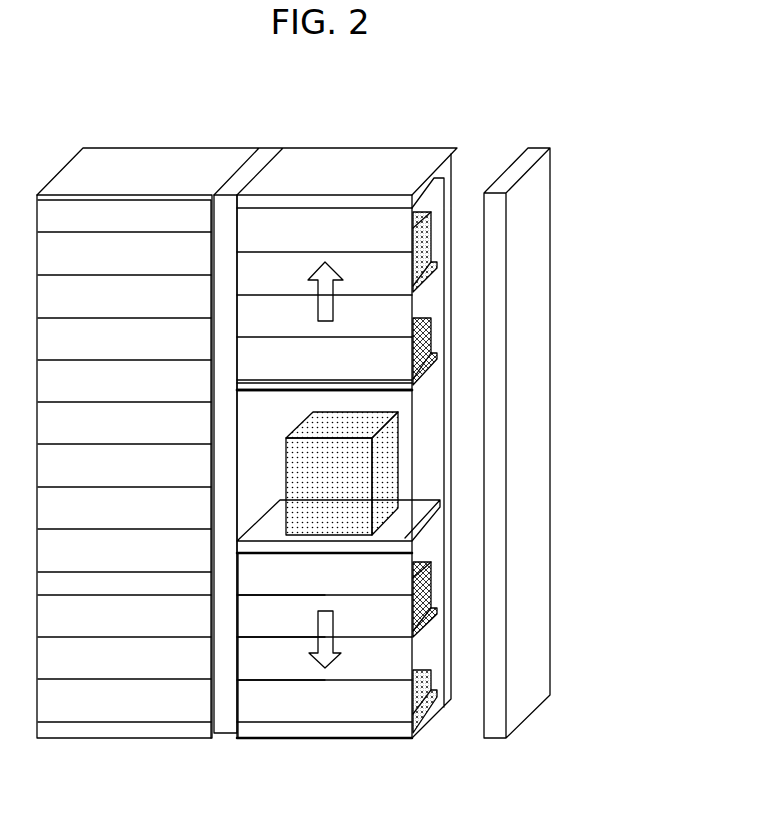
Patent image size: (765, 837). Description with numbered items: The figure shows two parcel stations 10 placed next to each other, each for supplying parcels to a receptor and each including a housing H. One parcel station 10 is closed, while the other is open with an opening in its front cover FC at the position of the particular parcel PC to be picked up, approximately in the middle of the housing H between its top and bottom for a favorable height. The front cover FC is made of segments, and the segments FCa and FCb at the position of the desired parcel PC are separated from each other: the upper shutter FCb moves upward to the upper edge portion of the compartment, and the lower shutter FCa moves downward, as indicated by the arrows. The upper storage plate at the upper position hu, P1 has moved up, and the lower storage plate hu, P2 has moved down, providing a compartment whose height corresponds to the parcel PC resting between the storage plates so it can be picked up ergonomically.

The parcel station 10 is at (157, 160).
The housing H is at (384, 178).
The upper shutter FCb is at (388, 356).
The upper storage plate at upper position hu, P1 is at (430, 384).
The parcel PC is at (385, 466).
The lower storage plate at its position hu, P2 is at (430, 533).
The front cover FC is at (372, 615).
The lower shutter FCa is at (272, 577).